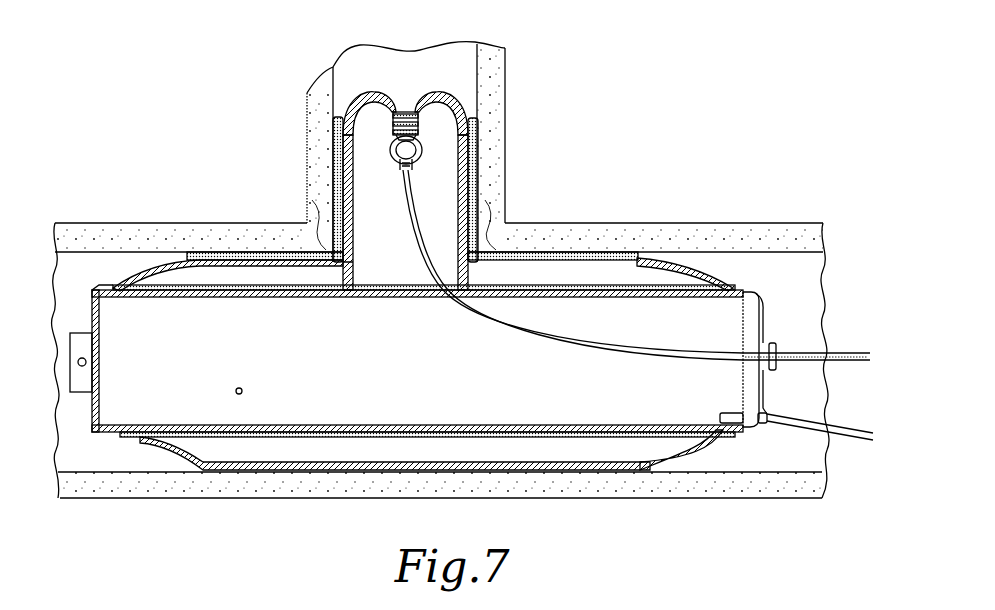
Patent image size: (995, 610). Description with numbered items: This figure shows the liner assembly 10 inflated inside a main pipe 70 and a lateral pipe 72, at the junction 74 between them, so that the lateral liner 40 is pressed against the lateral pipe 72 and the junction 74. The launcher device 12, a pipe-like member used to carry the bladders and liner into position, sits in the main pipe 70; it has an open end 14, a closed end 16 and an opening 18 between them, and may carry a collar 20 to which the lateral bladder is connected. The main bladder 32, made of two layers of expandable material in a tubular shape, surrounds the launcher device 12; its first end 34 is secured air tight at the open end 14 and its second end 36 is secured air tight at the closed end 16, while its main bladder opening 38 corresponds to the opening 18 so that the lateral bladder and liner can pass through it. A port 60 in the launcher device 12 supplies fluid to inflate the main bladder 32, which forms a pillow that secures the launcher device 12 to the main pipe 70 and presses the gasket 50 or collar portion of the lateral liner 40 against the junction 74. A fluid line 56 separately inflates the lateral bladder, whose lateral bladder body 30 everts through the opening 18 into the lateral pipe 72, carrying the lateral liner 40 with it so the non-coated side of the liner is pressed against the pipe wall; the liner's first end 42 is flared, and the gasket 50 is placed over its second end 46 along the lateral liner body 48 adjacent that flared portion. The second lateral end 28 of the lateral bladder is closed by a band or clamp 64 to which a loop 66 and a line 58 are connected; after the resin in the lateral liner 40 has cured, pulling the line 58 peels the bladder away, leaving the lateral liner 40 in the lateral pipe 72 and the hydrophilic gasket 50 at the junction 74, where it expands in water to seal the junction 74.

The liner assembly 10 is at (630, 180).
The launcher device 12 is at (782, 351).
The open end 14 is at (763, 323).
The closed end 16 is at (386, 363).
The opening 18 is at (322, 296).
The collar 20 is at (292, 291).
The second lateral end 28 is at (378, 92).
The lateral bladder body 30 is at (405, 177).
The main bladder 32 is at (135, 275).
The first end 34 is at (740, 293).
The second end 36 is at (90, 291).
The main bladder opening 38 is at (345, 268).
The lateral liner 40 is at (448, 252).
The first end 42 is at (330, 218).
The second end 46 is at (333, 115).
The lateral liner body 48 is at (333, 131).
The gasket 50 is at (248, 252).
The fluid line 56 is at (833, 424).
The line 58 is at (832, 353).
The port 60 is at (243, 388).
The band or clamp 64 is at (418, 116).
The loop 66 is at (397, 160).
The main pipe 70 is at (663, 223).
The lateral pipe 72 is at (505, 153).
The junction 74 is at (508, 223).